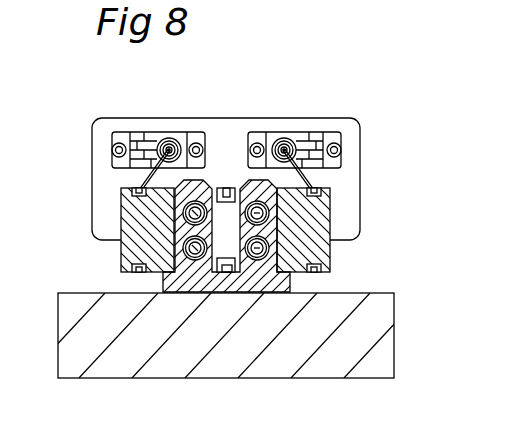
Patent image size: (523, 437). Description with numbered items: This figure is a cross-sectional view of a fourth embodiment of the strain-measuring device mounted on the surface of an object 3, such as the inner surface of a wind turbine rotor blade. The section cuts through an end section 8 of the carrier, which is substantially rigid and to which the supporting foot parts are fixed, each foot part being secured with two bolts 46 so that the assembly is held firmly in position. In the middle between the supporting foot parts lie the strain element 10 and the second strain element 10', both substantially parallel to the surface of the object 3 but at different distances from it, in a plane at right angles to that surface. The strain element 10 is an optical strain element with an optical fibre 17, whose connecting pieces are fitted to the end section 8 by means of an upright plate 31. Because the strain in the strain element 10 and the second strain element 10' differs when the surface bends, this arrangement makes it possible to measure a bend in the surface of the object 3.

The object 3 is at (383, 318).
The end section 8 is at (331, 252).
The strain element 10 is at (224, 141).
The second strain element 10' is at (240, 336).
The optical fibre 17 is at (131, 191).
The upright plate 31 is at (350, 127).
The bolt 46 is at (188, 220).